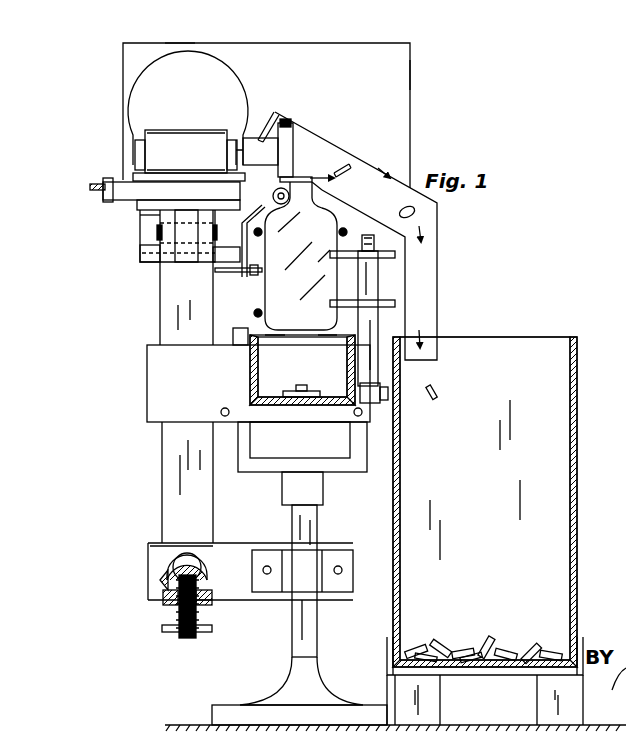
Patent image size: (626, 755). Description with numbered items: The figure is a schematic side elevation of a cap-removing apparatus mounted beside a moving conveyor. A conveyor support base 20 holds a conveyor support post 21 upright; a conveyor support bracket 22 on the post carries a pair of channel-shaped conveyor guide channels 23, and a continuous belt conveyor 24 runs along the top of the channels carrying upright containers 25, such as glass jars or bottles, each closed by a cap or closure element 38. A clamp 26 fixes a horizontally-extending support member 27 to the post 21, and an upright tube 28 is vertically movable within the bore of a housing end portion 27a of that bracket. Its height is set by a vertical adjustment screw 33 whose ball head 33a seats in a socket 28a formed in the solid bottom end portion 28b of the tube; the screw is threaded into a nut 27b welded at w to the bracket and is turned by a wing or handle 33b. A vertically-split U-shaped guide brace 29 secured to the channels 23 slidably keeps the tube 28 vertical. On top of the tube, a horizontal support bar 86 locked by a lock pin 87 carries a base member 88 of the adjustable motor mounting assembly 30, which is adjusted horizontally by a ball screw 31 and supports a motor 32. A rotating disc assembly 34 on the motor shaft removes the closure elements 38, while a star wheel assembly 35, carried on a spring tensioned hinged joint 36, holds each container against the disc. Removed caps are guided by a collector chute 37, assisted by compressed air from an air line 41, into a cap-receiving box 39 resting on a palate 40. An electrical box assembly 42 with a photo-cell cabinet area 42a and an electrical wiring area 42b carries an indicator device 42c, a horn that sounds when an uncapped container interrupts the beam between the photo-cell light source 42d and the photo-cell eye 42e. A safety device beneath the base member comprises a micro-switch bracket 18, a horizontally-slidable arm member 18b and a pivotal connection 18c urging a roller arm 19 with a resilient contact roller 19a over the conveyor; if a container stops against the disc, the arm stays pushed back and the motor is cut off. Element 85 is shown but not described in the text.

The micro-switch bracket 18 is at (140, 228).
The horizontally-slidable arm member 18b is at (142, 256).
The pivotal connection 18c is at (215, 270).
The roller arm 19 is at (256, 241).
The contact roller 19a is at (252, 278).
The conveyor support base 20 is at (265, 700).
The conveyor support post 21 is at (318, 625).
The conveyor support bracket 22 is at (348, 472).
The conveyor guide channels 23 is at (258, 375).
The continuous belt conveyor 24 is at (300, 337).
The container 25 is at (265, 295).
The clamp 26 is at (318, 556).
The horizontally-extending support member 27 is at (242, 590).
The housing end portion 27a is at (150, 556).
The nut 27b is at (163, 608).
The upright tube 28 is at (160, 327).
The socket 28a is at (170, 552).
The solid bottom end portion 28b is at (160, 580).
The U-shaped guide brace 29 is at (147, 380).
The adjustable motor mounting assembly 30 is at (125, 190).
The horizontal adjusting ball screw 31 is at (97, 184).
The motor 32 is at (150, 130).
The vertical adjustment screw 33 is at (188, 640).
The ball head 33a is at (200, 560).
The wing or handle 33b is at (165, 632).
The rotating disc assembly 34 is at (293, 128).
The star wheel assembly 35 is at (403, 293).
The spring tensioned hinged joint 36 is at (383, 332).
The collector chute 37 is at (375, 168).
The closure element 38 is at (420, 215).
The cap-receiving box 39 is at (577, 496).
The palate 40 is at (410, 690).
The air line 41 is at (238, 276).
The electrical box assembly 42 is at (375, 43).
The photo-cell cabinet area 42a is at (411, 72).
The electrical wiring area 42b is at (178, 43).
The indicator device 42c is at (243, 75).
The photo-cell light source 42d is at (268, 138).
The photo-cell eye 42e is at (340, 165).
The bolts 85 is at (343, 232).
The horizontal support bar 86 is at (178, 258).
The lock pin 87 is at (157, 233).
The base member 88 is at (150, 222).
The weld w is at (212, 600).